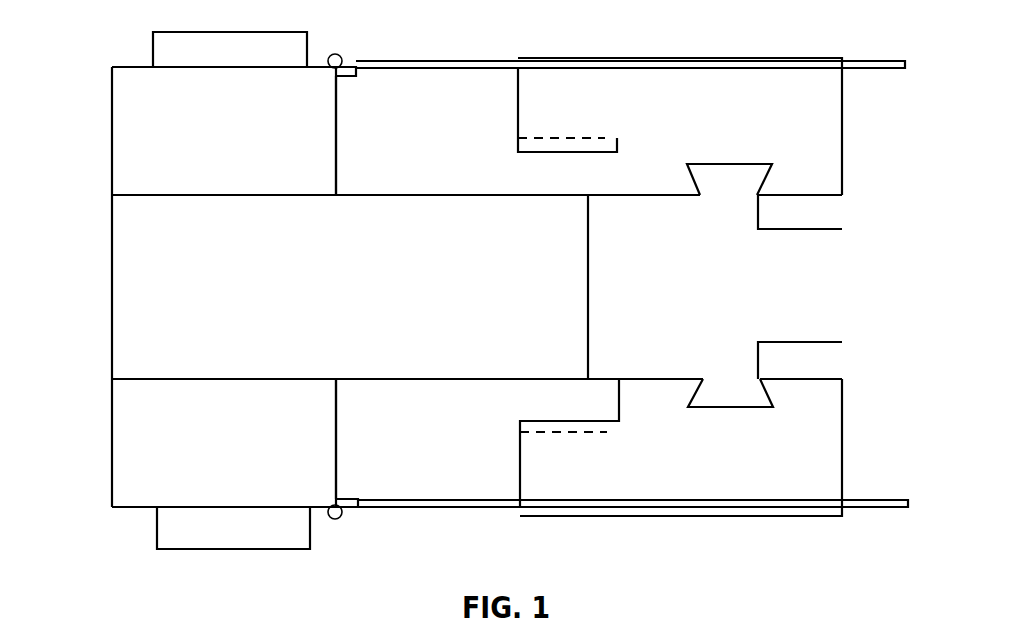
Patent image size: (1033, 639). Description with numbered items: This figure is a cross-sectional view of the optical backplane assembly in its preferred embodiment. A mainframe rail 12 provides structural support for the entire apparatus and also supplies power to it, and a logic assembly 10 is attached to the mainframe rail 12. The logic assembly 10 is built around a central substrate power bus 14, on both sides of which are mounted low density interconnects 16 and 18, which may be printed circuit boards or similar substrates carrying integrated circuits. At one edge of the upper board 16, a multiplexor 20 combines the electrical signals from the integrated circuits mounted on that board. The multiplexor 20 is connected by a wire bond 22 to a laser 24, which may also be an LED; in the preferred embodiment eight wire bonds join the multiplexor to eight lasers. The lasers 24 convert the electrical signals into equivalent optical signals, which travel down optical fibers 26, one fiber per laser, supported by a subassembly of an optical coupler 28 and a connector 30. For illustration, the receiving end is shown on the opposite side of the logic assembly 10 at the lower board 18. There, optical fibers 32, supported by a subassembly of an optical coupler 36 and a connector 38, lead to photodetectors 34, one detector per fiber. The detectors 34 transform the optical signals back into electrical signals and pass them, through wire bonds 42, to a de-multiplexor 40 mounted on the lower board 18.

The logic assembly 10 is at (105, 250).
The mainframe rail 12 is at (714, 303).
The substrate power bus 14 is at (356, 307).
The low density interconnect 16 is at (214, 144).
The low density interconnect 18 is at (217, 470).
The multiplexor 20 is at (213, 62).
The wire bond 22 is at (338, 59).
The laser 24 is at (350, 64).
The optical fiber 26 is at (887, 60).
The optical coupler 28 is at (414, 140).
The connector 30 is at (712, 140).
The optical fiber 32 is at (892, 507).
The photodetector 34 is at (352, 511).
The optical coupler 36 is at (417, 468).
The connector 38 is at (719, 463).
The de-multiplexor 40 is at (217, 541).
The wire bond 42 is at (341, 518).